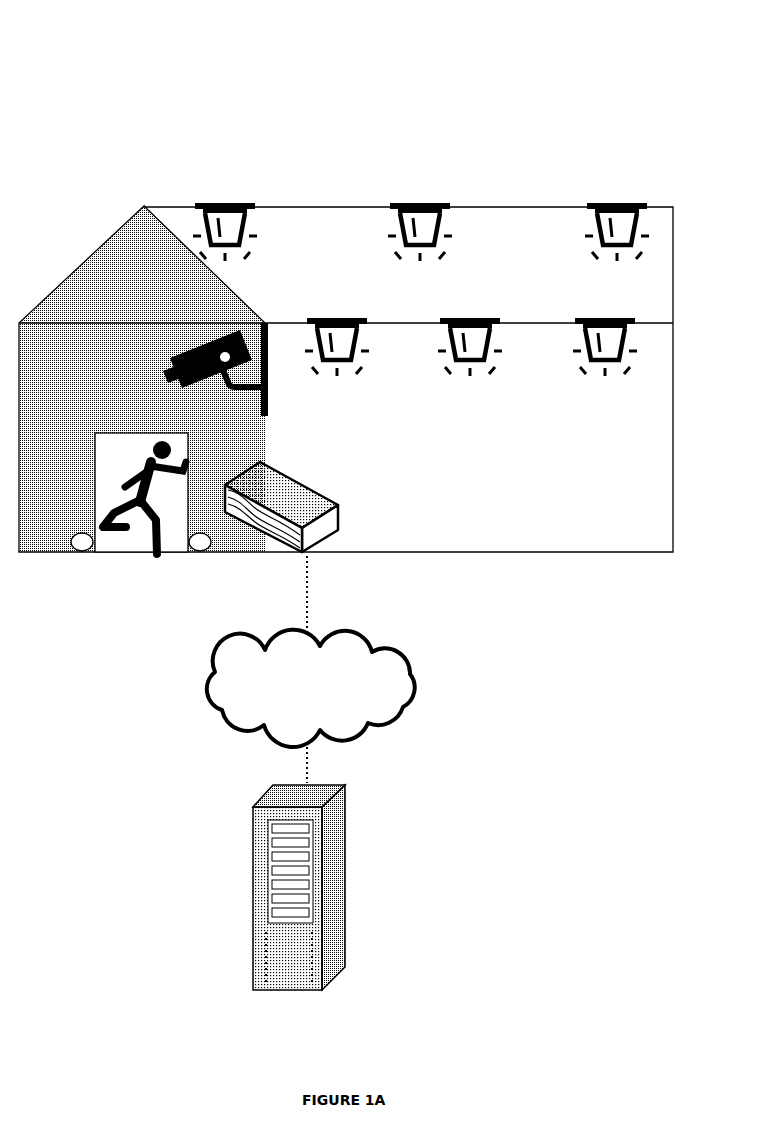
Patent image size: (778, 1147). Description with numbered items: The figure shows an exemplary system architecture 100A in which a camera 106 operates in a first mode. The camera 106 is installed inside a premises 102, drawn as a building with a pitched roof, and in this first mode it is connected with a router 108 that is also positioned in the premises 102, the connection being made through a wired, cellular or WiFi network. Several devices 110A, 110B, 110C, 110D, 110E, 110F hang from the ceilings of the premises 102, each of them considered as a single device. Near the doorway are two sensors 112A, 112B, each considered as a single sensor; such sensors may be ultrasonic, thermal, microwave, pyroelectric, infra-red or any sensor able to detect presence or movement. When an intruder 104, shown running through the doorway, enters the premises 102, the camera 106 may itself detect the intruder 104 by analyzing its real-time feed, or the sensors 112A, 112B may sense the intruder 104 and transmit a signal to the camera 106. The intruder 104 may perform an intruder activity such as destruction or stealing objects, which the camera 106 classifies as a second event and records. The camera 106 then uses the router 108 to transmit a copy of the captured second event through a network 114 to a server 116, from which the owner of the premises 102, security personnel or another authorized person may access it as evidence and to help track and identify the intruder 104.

The system architecture 100A is at (398, 70).
The premises 102 is at (128, 222).
The intruder 104 is at (123, 478).
The camera 106 is at (207, 337).
The router 108 is at (345, 510).
The device 110A is at (231, 200).
The device 110B is at (426, 202).
The device 110C is at (622, 202).
The device 110D is at (335, 370).
The device 110E is at (470, 370).
The device 110F is at (612, 372).
The sensor 112A is at (85, 550).
The sensor 112B is at (198, 550).
The network 114 is at (370, 650).
The server 116 is at (340, 838).